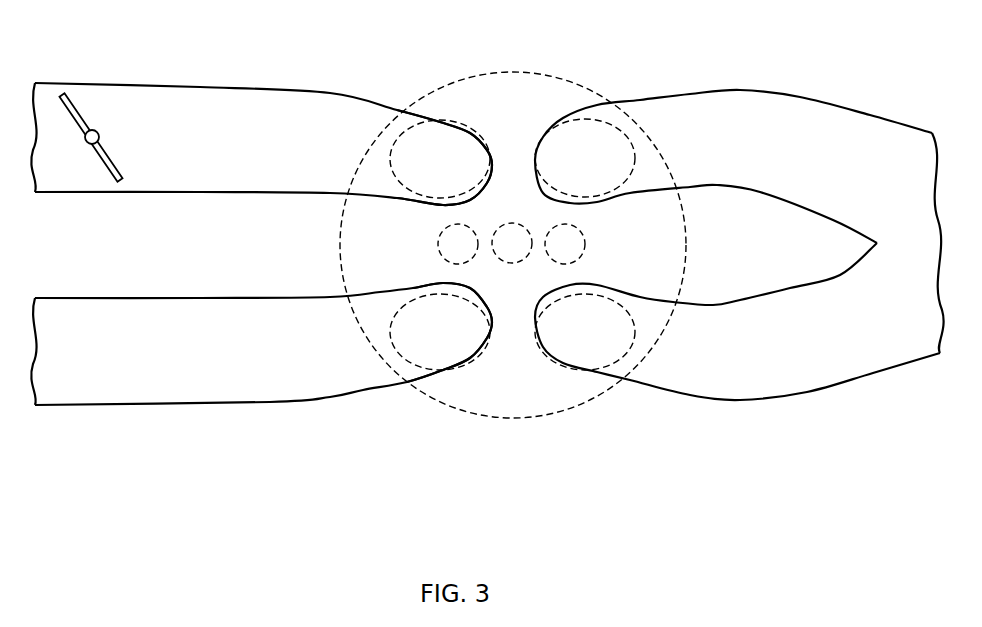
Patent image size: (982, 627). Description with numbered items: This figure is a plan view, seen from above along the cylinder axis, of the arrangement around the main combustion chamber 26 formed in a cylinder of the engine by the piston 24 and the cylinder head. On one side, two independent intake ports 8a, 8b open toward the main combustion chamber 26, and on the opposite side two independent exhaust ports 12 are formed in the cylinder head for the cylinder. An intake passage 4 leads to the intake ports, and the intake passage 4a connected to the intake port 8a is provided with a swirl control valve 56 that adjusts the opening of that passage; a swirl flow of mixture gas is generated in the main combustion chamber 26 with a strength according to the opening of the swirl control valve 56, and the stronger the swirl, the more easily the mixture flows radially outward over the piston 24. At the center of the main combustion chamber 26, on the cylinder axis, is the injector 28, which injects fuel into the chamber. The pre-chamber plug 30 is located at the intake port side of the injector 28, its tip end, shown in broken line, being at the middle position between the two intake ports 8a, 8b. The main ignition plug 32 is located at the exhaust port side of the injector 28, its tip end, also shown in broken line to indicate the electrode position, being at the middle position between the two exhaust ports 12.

The intake passage 4 is at (110, 302).
The intake passage 4a is at (157, 90).
The intake port 8a is at (335, 97).
The intake port 8b is at (270, 402).
The exhaust port 12 is at (674, 104).
The piston 24 is at (513, 287).
The main combustion chamber 26 is at (505, 421).
The injector 28 is at (520, 222).
The pre-chamber plug 30 is at (437, 243).
The main ignition plug 32 is at (586, 240).
The swirl control valve 56 is at (80, 97).